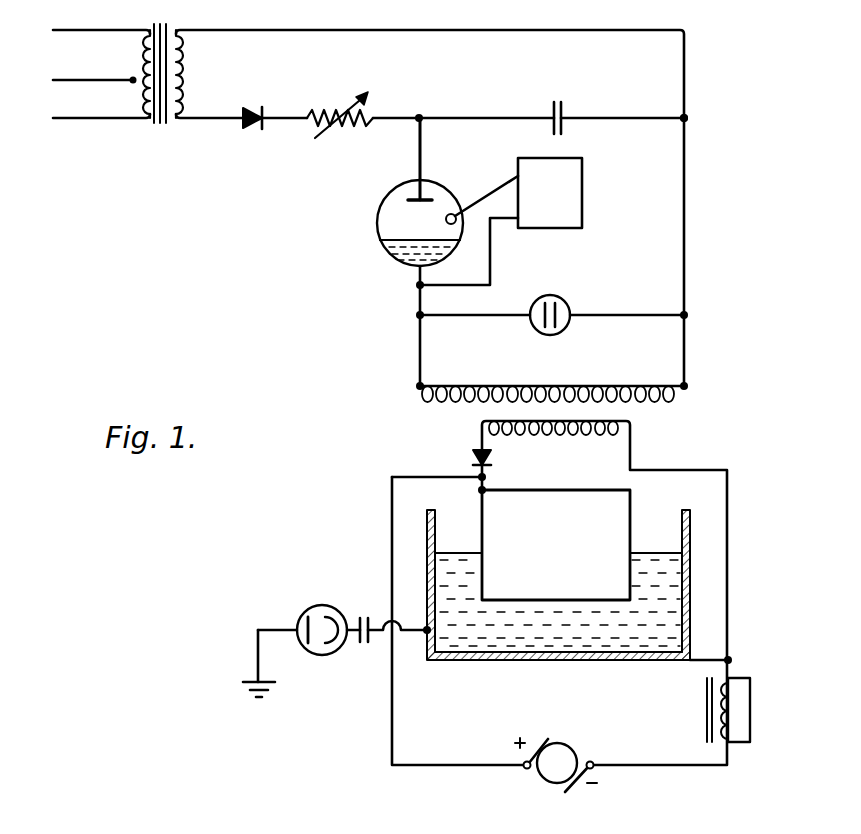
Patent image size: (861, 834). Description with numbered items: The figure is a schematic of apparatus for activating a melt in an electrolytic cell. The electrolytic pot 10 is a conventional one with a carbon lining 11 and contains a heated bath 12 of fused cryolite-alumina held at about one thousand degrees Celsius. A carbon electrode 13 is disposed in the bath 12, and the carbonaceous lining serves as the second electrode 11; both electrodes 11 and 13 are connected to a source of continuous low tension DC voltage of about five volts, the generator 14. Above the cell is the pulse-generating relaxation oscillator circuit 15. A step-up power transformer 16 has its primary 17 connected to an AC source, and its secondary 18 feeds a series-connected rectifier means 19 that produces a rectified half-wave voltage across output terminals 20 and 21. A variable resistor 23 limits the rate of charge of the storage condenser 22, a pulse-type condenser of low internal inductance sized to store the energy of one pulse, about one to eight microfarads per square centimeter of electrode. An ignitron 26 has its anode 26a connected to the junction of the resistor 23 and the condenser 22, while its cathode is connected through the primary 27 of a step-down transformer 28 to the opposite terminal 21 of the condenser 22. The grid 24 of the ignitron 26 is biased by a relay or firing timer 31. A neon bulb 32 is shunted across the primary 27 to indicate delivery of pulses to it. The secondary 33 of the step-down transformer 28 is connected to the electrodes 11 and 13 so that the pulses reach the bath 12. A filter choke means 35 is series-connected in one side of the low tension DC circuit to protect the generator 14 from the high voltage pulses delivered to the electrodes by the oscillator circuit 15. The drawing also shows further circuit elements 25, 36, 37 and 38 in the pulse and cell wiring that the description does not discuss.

The electrolytic pot 10 is at (467, 665).
The carbon lining 11 is at (512, 665).
The heated bath 12 is at (563, 640).
The carbon electrode 13 is at (633, 505).
The generator 14 is at (547, 782).
The relaxation oscillator circuit 15 is at (397, 265).
The step-up power transformer 16 is at (163, 122).
The primary 17 is at (143, 121).
The secondary 18 is at (190, 62).
The rectifier means 19 is at (259, 107).
The output terminal 20 is at (426, 110).
The output terminal 21 is at (690, 120).
The storage condenser 22 is at (562, 100).
The variable resistor 23 is at (356, 134).
The grid 24 is at (480, 194).
The diode 25 is at (471, 456).
The ignitron 26 is at (378, 227).
The anode 26a is at (412, 197).
The primary 27 is at (690, 393).
The step-down transformer 28 is at (633, 412).
The firing timer 31 is at (540, 205).
The neon bulb 32 is at (566, 301).
The secondary 33 is at (537, 437).
The filter choke means 35 is at (740, 677).
The capacitor 36 is at (367, 648).
The electron tube 37 is at (322, 602).
The ground 38 is at (258, 680).